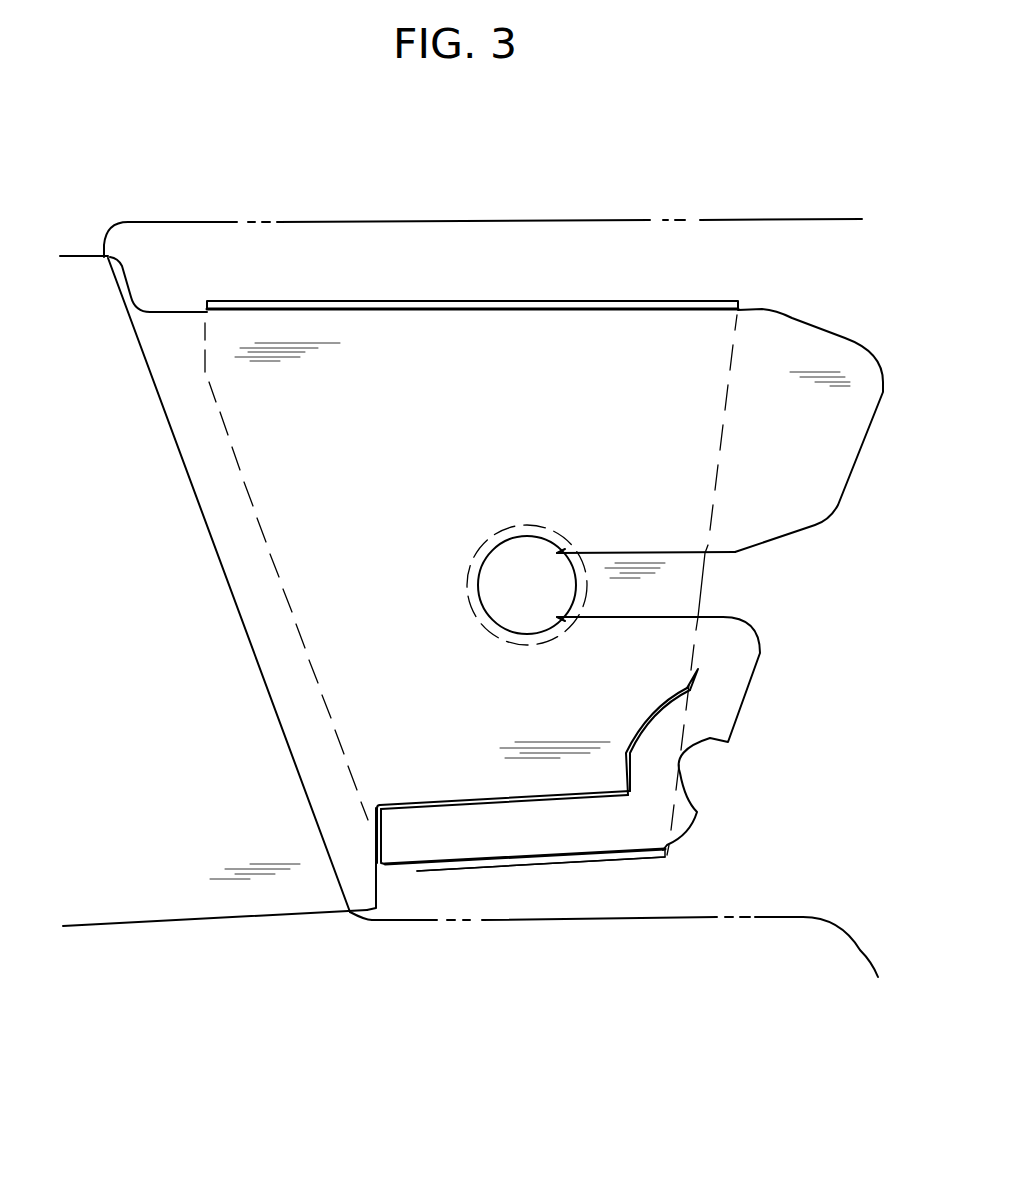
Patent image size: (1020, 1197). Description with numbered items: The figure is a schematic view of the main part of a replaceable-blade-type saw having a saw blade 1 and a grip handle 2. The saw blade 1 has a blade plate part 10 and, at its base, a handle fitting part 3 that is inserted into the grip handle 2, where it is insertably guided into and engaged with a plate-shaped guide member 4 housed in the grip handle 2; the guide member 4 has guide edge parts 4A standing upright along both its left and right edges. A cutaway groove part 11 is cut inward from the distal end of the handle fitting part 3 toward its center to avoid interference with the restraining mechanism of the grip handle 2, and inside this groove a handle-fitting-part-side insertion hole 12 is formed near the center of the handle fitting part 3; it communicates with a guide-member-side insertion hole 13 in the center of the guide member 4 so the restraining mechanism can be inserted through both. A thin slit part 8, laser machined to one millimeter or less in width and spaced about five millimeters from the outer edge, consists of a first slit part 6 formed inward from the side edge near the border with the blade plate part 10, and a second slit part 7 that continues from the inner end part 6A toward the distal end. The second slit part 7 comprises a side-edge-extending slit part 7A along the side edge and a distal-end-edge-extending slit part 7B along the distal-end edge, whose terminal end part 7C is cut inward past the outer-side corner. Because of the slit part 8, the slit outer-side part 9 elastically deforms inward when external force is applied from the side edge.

The saw blade 1 is at (110, 928).
The grip handle 2 is at (745, 216).
The handle fitting part 3 is at (808, 495).
The guide member 4 is at (675, 585).
The guide edge parts 4A is at (437, 300).
The first slit part 6 is at (375, 840).
The inner end part 6A is at (377, 805).
The second slit part 7 is at (601, 755).
The side-edge-extending slit part 7A is at (452, 800).
The distal-end-edge-extending slit part 7B is at (642, 722).
The terminal end part 7C is at (698, 671).
The slit part 8 is at (612, 797).
The slit outer-side part 9 is at (572, 843).
The blade plate part 10 is at (173, 883).
The cutaway groove part 11 is at (685, 553).
The handle-fitting-part-side insertion hole 12 is at (500, 546).
The guide-member-side insertion hole 13 is at (582, 596).